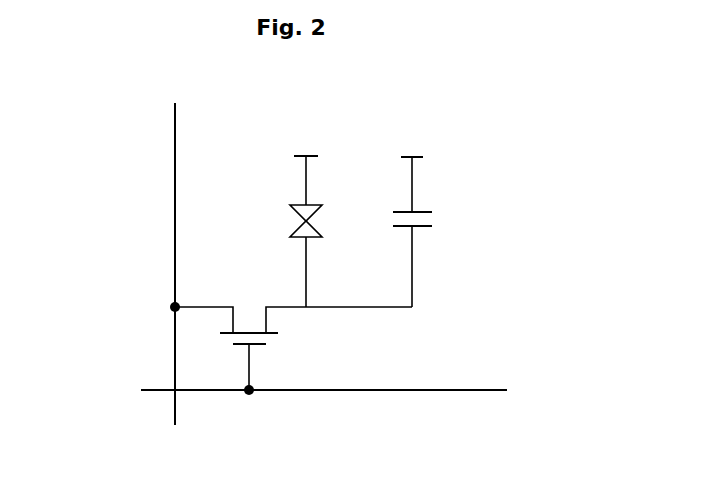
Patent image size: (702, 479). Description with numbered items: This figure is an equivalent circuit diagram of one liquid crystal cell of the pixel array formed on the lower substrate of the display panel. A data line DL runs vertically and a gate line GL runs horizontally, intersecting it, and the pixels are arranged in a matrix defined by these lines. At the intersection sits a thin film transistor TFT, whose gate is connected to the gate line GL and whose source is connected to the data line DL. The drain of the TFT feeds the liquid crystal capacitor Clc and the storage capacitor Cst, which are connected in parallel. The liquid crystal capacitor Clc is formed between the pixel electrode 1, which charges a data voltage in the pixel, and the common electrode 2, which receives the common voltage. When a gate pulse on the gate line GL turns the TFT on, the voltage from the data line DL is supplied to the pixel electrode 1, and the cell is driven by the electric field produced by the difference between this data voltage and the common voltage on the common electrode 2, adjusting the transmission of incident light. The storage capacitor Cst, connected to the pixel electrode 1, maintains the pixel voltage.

The pixel electrode 1 is at (296, 229).
The common electrode 2 is at (300, 205).
The data line DL is at (175, 167).
The gate line GL is at (419, 392).
The thin film transistor TFT is at (291, 348).
The liquid crystal capacitor Clc is at (294, 220).
The storage capacitor Cst is at (428, 232).